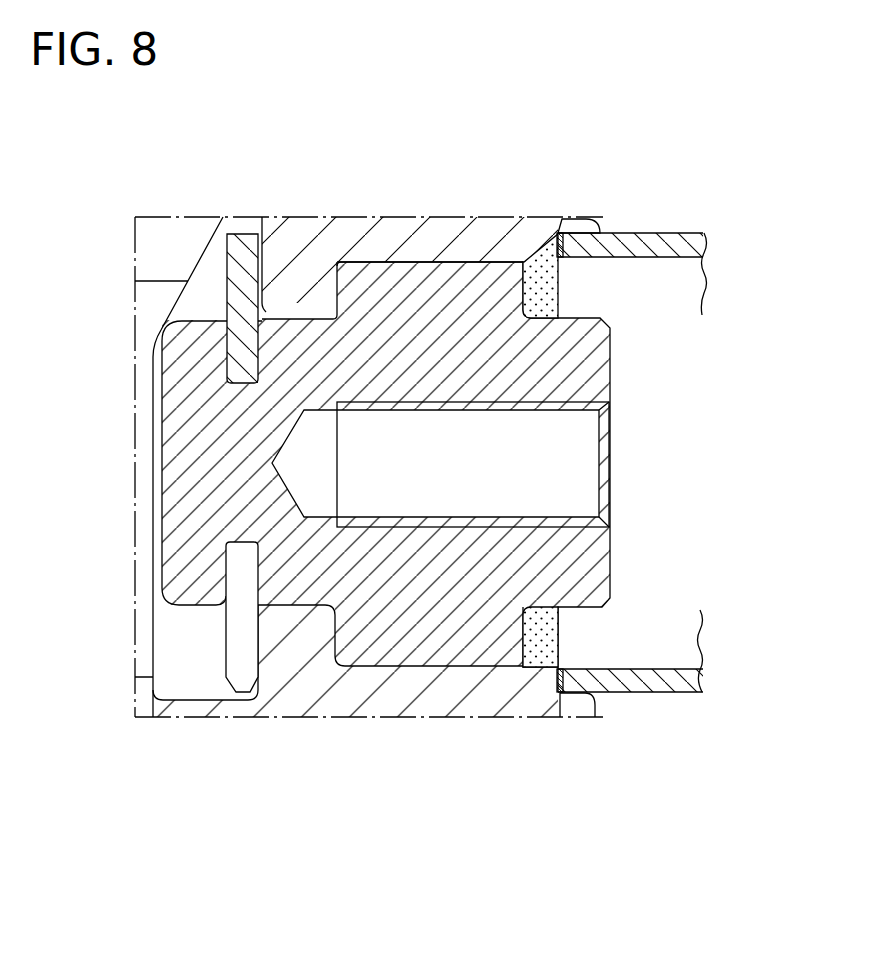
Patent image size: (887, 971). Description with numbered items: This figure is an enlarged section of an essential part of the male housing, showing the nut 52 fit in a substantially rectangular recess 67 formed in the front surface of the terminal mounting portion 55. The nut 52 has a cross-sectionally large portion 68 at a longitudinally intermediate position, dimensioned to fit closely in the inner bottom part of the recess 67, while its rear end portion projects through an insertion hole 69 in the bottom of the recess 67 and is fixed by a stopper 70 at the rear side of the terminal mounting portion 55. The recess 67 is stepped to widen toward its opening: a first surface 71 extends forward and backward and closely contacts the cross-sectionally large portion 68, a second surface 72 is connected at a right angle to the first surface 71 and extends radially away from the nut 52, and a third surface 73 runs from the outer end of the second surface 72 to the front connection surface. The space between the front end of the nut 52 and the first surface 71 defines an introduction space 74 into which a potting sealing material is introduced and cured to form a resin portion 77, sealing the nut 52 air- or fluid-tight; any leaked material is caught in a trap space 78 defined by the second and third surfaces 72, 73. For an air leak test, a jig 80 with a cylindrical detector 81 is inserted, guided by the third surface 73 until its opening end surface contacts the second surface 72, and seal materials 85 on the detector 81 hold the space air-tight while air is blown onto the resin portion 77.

The nut 52 is at (497, 262).
The terminal mounting portion 55 is at (385, 707).
The recess 67 is at (378, 262).
The cross-sectionally large portion 68 is at (448, 266).
The insertion hole 69 is at (288, 606).
The stopper 70 is at (242, 233).
The first surface 71 is at (410, 262).
The second surface 72 is at (580, 232).
The third surface 73 is at (600, 235).
The introduction space 74 is at (546, 660).
The resin portion 77 is at (545, 262).
The trap space 78 is at (584, 650).
The jig 80 is at (693, 232).
The detector 81 is at (651, 232).
The seal materials 85 is at (577, 697).